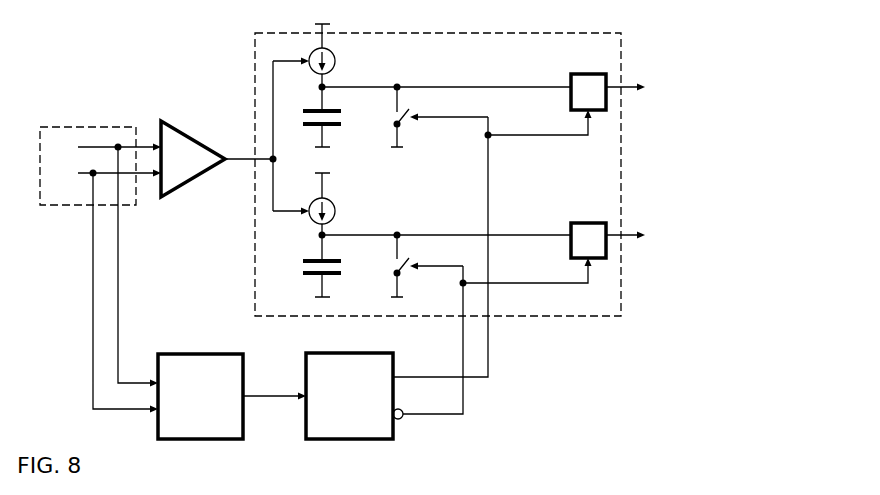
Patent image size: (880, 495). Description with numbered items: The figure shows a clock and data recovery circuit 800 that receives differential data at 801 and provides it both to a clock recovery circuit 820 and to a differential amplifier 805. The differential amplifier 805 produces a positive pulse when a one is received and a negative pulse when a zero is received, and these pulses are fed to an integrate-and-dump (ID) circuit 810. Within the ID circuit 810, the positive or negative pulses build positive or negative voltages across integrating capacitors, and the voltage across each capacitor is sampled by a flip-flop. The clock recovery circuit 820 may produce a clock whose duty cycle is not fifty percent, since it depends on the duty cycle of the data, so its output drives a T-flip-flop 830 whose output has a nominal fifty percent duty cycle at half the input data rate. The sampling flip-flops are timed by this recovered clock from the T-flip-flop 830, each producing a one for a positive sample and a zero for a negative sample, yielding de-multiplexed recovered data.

The clock and data recovery circuit 800 is at (395, 231).
The differential data input 801 is at (59, 120).
The differential amplifier 805 is at (200, 188).
The integrate-and-dump (ID) circuit 810 is at (629, 72).
The clock recovery circuit 820 is at (217, 353).
The T-flip-flop 830 is at (342, 353).